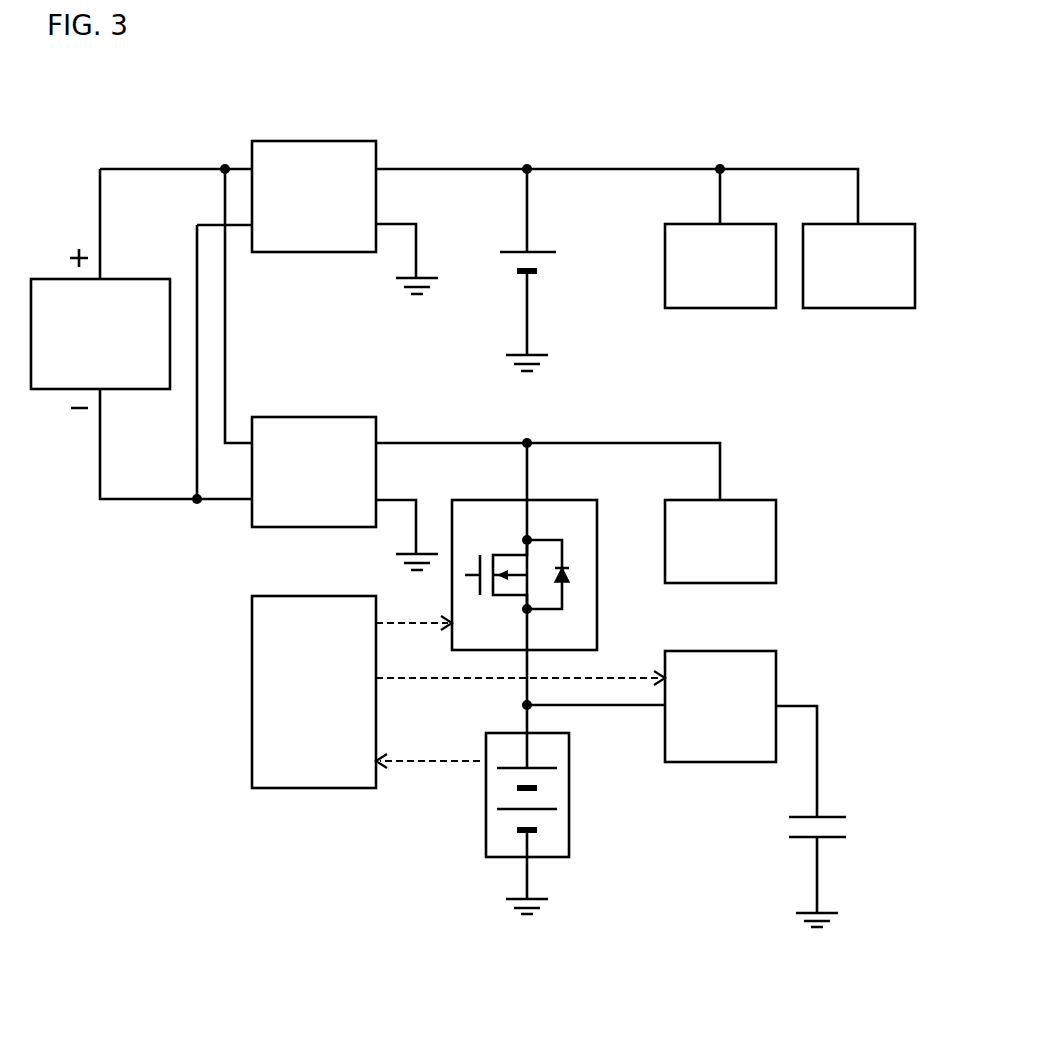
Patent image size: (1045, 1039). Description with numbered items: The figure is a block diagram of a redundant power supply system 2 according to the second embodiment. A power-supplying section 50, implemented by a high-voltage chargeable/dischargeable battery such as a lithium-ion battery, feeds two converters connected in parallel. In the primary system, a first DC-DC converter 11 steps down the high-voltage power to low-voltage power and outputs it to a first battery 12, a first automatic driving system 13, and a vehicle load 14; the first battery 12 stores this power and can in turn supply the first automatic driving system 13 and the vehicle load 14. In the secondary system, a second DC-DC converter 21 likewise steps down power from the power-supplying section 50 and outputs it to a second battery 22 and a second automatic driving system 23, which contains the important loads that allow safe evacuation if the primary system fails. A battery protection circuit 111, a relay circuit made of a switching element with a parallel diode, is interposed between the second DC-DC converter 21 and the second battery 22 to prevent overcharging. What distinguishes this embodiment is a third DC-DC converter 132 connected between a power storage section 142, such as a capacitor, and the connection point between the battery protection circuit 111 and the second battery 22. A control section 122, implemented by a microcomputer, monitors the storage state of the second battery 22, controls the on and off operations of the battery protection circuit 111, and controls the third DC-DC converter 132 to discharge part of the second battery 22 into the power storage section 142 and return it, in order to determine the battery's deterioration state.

The redundant power supply system 2 is at (813, 91).
The first DC-DC converter 11 is at (337, 141).
The first battery 12 is at (538, 250).
The first automatic driving system 13 is at (747, 224).
The vehicle load 14 is at (886, 224).
The second DC-DC converter 21 is at (337, 417).
The second battery 22 is at (570, 793).
The second automatic driving system 23 is at (748, 500).
The power-supplying section 50 is at (128, 279).
The battery protection circuit 111 is at (597, 539).
The control section 122 is at (252, 636).
The third DC-DC converter 132 is at (777, 688).
The power storage section 142 is at (830, 808).